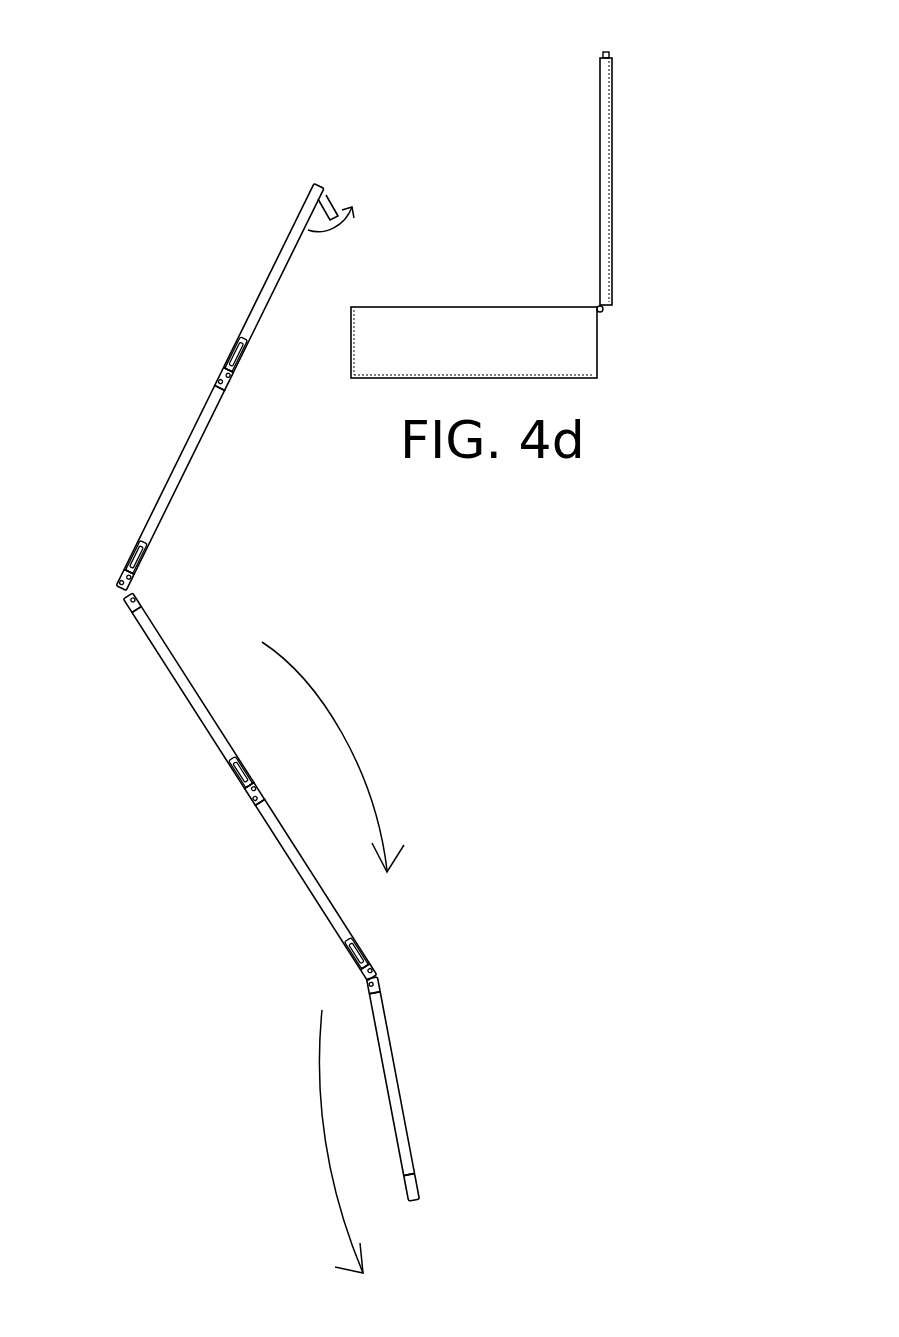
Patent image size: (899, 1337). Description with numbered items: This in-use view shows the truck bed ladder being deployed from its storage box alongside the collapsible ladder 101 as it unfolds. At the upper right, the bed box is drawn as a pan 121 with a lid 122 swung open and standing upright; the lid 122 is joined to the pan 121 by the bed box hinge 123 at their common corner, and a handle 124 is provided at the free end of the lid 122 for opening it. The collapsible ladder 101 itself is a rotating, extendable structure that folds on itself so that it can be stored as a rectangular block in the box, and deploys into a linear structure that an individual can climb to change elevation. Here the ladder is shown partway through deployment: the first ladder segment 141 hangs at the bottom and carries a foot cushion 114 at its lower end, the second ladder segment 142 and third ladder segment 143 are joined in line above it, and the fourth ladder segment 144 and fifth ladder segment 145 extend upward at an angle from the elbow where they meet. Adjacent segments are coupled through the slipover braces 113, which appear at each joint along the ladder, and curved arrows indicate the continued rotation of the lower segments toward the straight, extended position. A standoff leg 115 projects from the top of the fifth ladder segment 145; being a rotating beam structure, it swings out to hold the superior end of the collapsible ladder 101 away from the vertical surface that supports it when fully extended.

The collapsible ladder 101 is at (560, 232).
The slipover braces 113 is at (238, 385).
The foot cushions 114 is at (432, 1188).
The standoff legs 115 is at (341, 185).
The pan 121 is at (577, 362).
The lid 122 is at (612, 170).
The bed box hinge 123 is at (606, 313).
The handle 124 is at (610, 42).
The first ladder segment 141 is at (398, 1058).
The second ladder segment 142 is at (285, 862).
The third ladder segment 143 is at (182, 652).
The fourth ladder segment 144 is at (151, 431).
The fifth ladder segment 145 is at (252, 256).